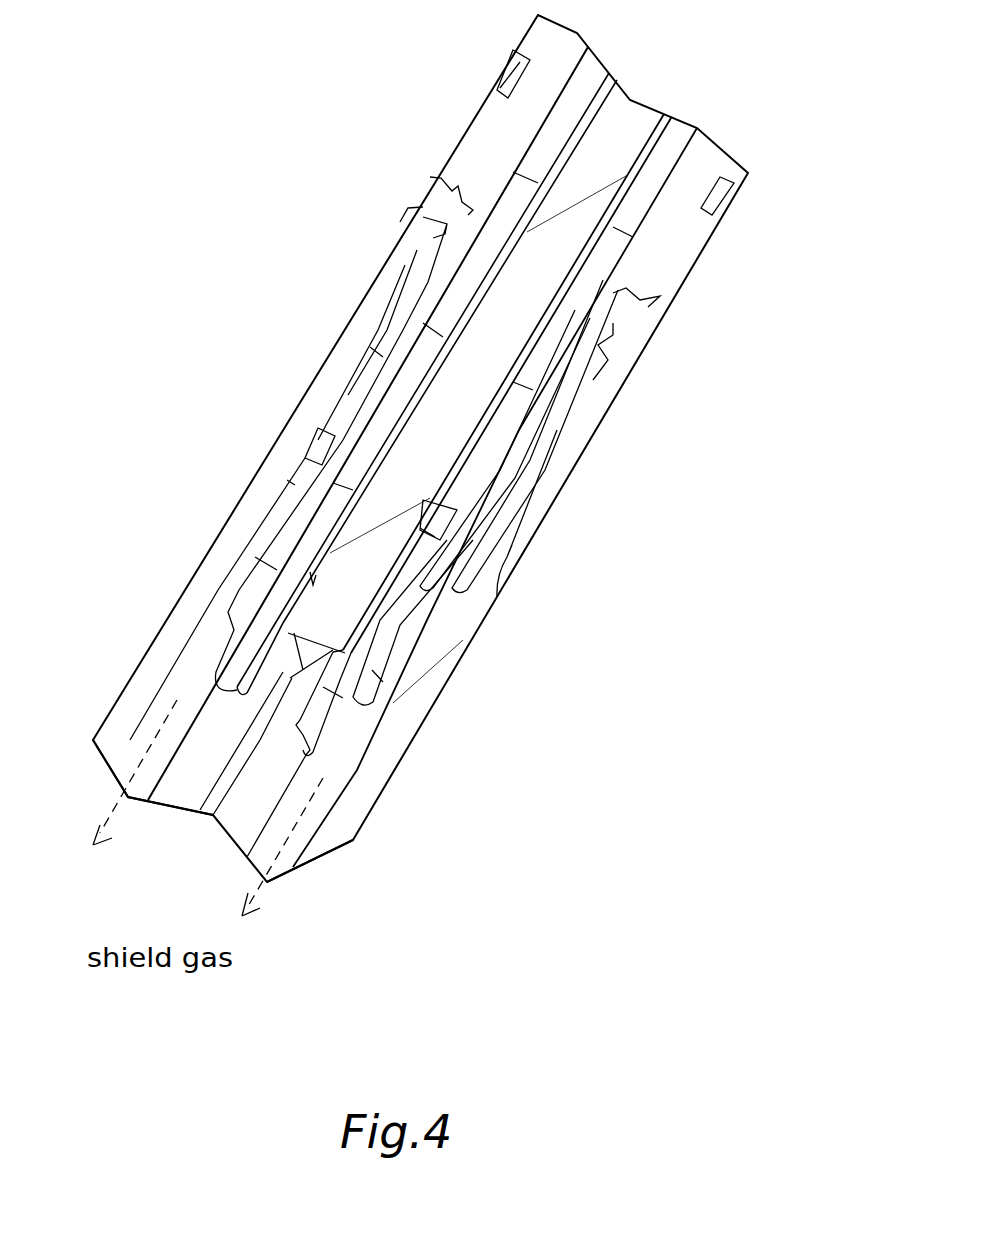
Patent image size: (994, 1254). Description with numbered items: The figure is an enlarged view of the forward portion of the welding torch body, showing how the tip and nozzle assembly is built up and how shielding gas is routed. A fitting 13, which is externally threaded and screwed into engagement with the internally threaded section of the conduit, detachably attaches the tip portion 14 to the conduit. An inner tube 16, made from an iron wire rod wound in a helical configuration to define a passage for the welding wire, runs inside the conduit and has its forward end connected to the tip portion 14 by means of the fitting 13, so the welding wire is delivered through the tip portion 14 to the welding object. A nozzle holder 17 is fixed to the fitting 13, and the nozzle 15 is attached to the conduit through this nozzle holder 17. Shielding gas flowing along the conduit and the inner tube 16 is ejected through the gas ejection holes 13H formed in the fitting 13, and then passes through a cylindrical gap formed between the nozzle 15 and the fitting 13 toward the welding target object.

The fitting 13 is at (647, 193).
The gas ejection holes 13H is at (350, 470).
The tip portion 14 is at (292, 772).
The nozzle 15 is at (123, 723).
The inner tube 16 is at (523, 312).
The nozzle holder 17 is at (668, 262).